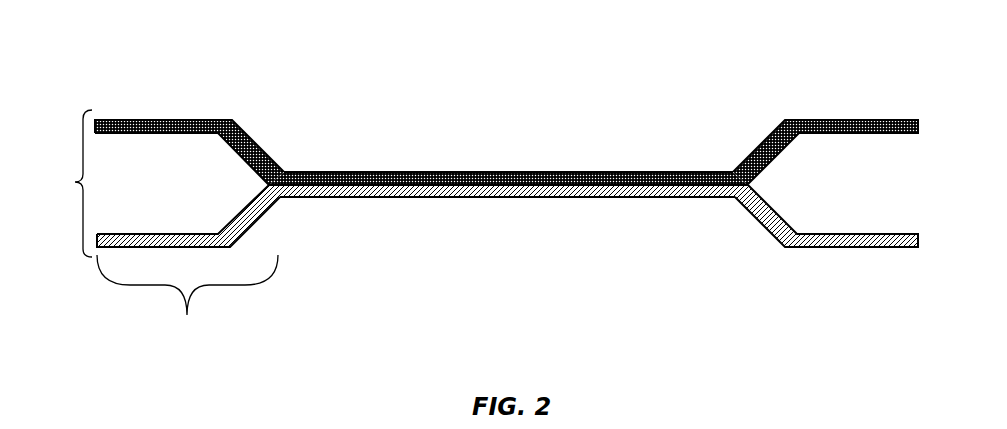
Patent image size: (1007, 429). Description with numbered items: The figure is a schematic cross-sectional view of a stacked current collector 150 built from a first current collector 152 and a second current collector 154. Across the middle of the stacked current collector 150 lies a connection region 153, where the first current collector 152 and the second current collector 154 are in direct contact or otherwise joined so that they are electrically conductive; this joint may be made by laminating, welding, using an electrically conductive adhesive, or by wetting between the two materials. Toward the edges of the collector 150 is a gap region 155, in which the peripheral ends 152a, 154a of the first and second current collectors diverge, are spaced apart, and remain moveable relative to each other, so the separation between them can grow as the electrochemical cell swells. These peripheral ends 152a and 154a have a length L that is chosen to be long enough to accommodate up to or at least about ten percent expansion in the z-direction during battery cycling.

The stacked current collector 150 is at (317, 68).
The first current collector 152 is at (823, 120).
The peripheral end of the first current collector 152a is at (172, 120).
The connection region 153 is at (738, 220).
The second current collector 154 is at (852, 234).
The peripheral end of the second current collector 154a is at (188, 233).
The gap region 155 is at (67, 183).
The length L is at (187, 298).